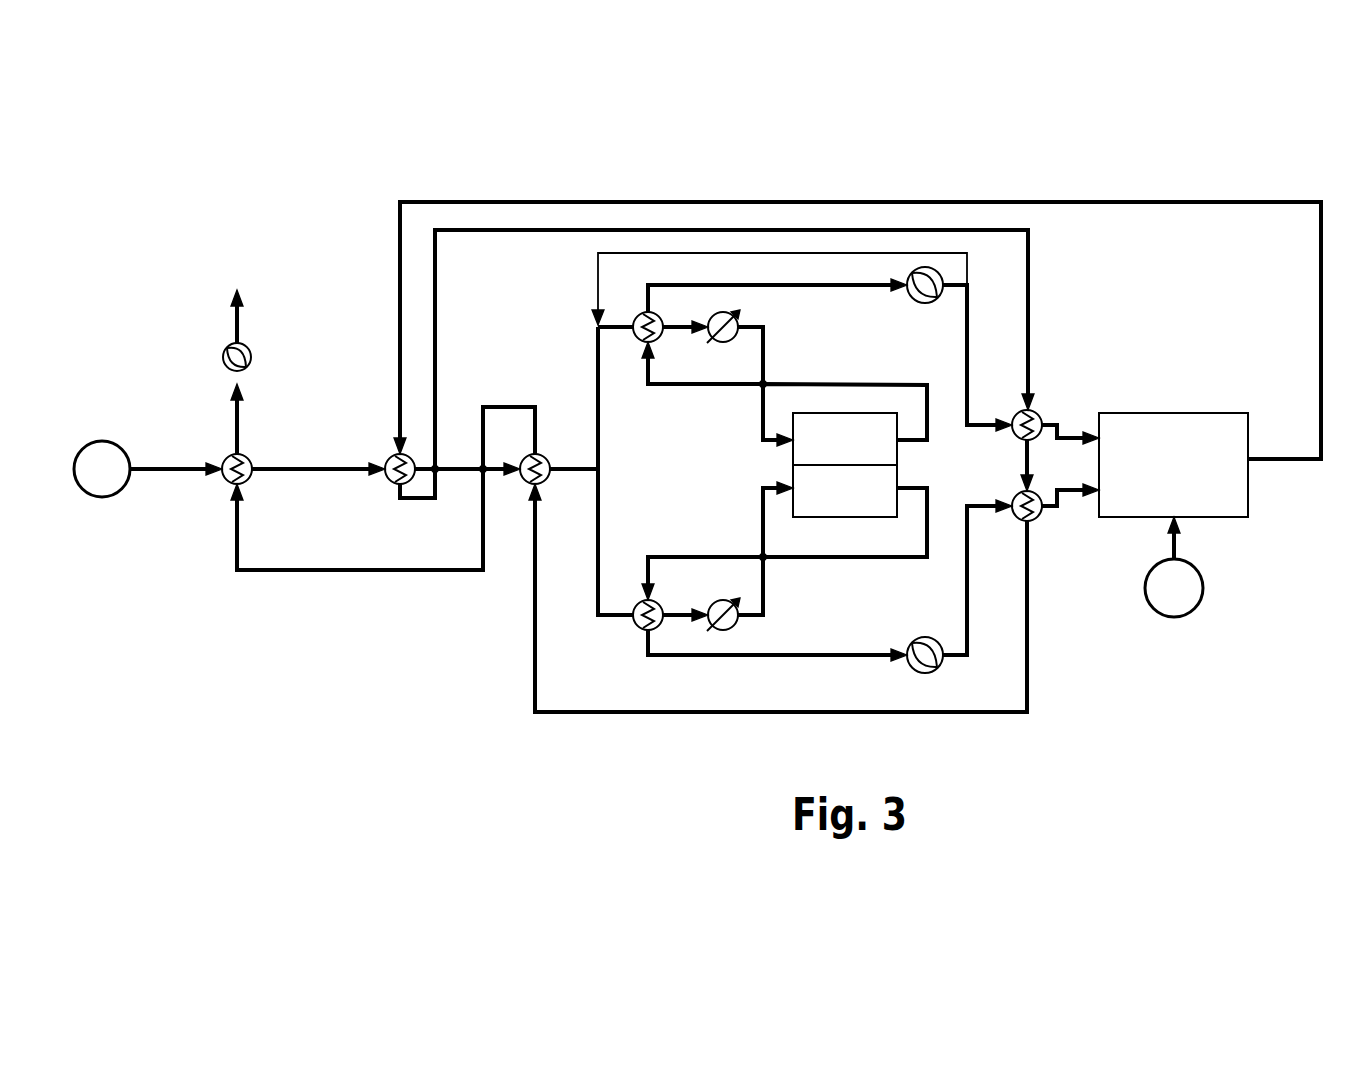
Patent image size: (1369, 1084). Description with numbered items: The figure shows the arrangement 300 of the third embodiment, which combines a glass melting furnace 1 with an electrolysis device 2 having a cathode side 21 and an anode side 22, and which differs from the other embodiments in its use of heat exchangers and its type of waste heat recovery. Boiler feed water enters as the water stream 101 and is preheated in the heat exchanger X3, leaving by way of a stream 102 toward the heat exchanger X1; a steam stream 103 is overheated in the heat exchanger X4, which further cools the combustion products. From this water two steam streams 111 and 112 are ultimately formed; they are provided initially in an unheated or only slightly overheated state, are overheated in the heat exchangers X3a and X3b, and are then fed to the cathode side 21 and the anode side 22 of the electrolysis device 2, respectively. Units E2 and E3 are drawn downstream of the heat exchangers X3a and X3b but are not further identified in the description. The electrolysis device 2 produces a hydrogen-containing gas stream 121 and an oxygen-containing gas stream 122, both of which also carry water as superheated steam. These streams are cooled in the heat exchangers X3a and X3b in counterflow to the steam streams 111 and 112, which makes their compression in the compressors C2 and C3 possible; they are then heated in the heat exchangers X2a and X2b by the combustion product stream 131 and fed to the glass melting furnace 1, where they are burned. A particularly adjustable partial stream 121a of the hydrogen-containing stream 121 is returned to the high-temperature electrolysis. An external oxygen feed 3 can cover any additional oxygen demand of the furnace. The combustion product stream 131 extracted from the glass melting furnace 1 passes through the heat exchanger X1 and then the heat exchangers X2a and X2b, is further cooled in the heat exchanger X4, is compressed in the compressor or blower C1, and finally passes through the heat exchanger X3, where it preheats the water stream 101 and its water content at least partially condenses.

The arrangement 300 is at (172, 231).
The water stream 101 is at (155, 488).
The conduit 102 is at (295, 468).
The steam stream 103 is at (567, 472).
The heat exchanger X1 is at (388, 458).
The heat exchanger X3 is at (223, 458).
The heat exchanger X4 is at (540, 455).
The heat exchanger X3a is at (638, 343).
The heat exchanger X3b is at (637, 600).
The heat exchanger X2a is at (1038, 407).
The heat exchanger X2b is at (1033, 522).
The compressor or blower C1 is at (245, 342).
The compressor C2 is at (910, 270).
The compressor C3 is at (918, 673).
The expander E2 is at (722, 347).
The expander E3 is at (720, 590).
The steam stream 111 is at (778, 433).
The steam stream 112 is at (787, 495).
The hydrogen-containing gas stream 121 is at (967, 315).
The partial stream 121a is at (712, 252).
The oxygen-containing gas stream 122 is at (967, 605).
The combustion product stream 131 is at (1292, 463).
The electrolysis device 2 is at (854, 481).
The cathode side 21 is at (878, 422).
The anode side 22 is at (880, 507).
The glass melting furnace 1 is at (1115, 506).
The external oxygen feed 3 is at (1197, 587).